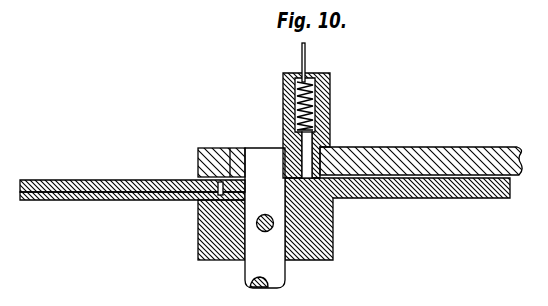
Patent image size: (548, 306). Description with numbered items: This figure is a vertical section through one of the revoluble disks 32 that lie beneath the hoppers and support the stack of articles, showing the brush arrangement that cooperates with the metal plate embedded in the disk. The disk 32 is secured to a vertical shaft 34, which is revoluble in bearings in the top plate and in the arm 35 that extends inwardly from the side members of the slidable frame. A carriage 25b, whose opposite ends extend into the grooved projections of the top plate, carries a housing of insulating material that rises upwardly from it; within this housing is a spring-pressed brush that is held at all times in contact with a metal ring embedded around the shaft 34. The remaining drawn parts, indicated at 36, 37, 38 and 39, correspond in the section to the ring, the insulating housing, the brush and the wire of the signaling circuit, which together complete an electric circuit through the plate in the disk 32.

The carriage 25b is at (402, 153).
The revoluble disk 32 is at (390, 197).
The vertical shaft 34 is at (258, 156).
The arm 35 is at (177, 180).
The clamp block 36 is at (228, 148).
The spring housing 37 is at (328, 101).
The plunger pin 38 is at (319, 144).
The rod 39 is at (306, 49).